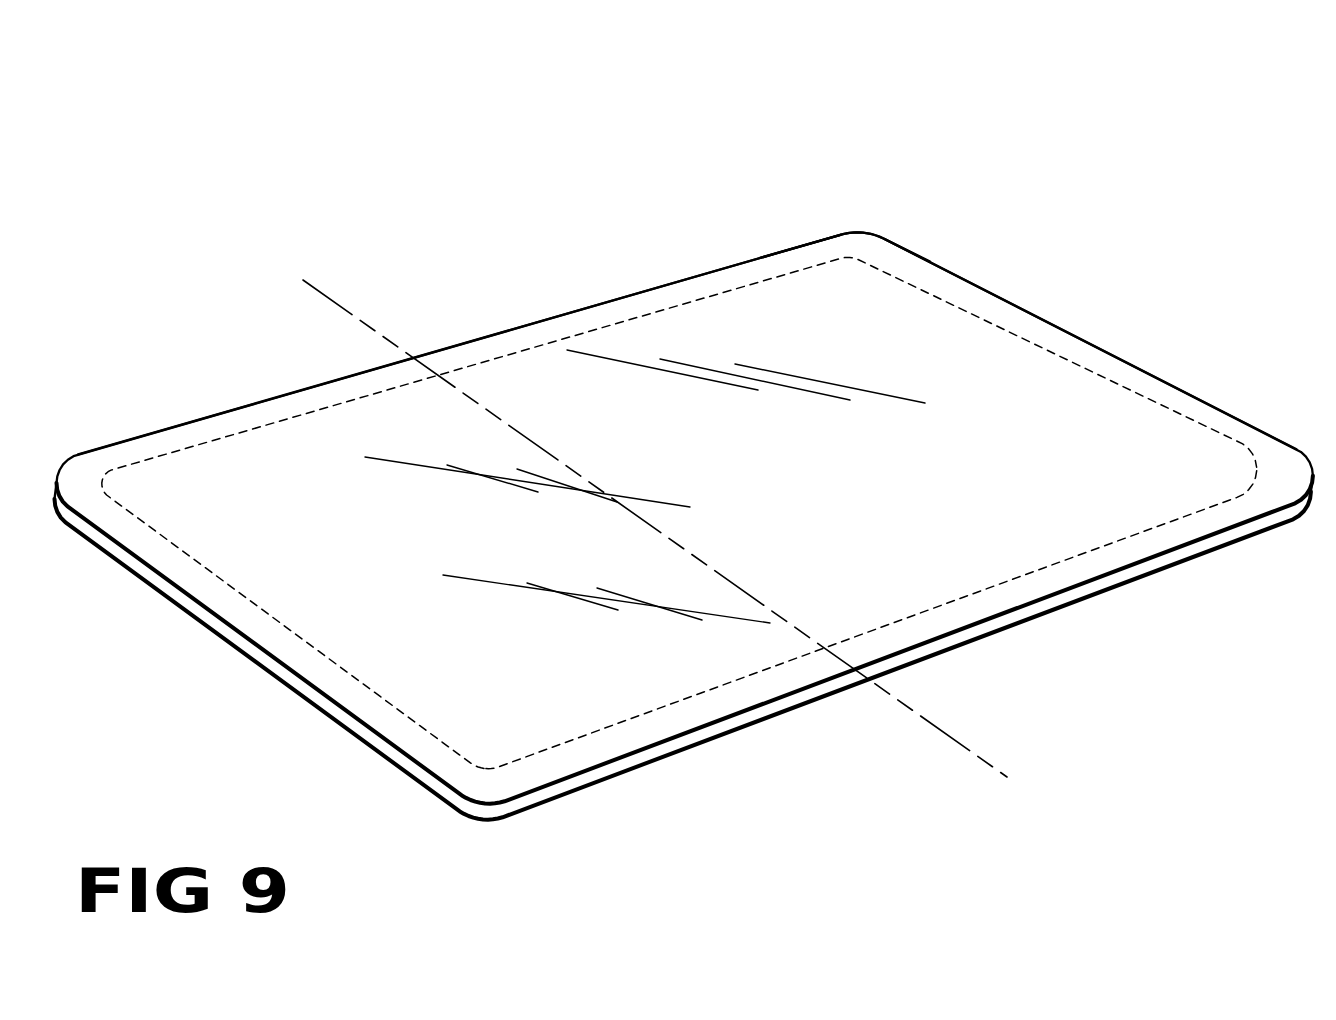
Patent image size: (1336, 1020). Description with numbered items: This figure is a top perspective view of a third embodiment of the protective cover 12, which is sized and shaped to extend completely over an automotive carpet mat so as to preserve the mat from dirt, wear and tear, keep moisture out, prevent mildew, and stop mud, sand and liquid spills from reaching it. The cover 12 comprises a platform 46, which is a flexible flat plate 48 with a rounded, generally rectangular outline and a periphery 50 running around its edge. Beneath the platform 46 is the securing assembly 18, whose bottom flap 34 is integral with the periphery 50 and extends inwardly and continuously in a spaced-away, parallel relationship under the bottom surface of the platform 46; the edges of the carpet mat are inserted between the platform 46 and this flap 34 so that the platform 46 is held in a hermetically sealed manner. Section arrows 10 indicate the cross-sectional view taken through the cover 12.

The section line 10 is at (307, 345).
The protective cover 12 is at (829, 158).
The securing assembly 18 is at (289, 618).
The bottom flap 34 is at (910, 611).
The platform 46 is at (497, 330).
The flexible flat plate 48 is at (751, 250).
The periphery 50 is at (1081, 342).